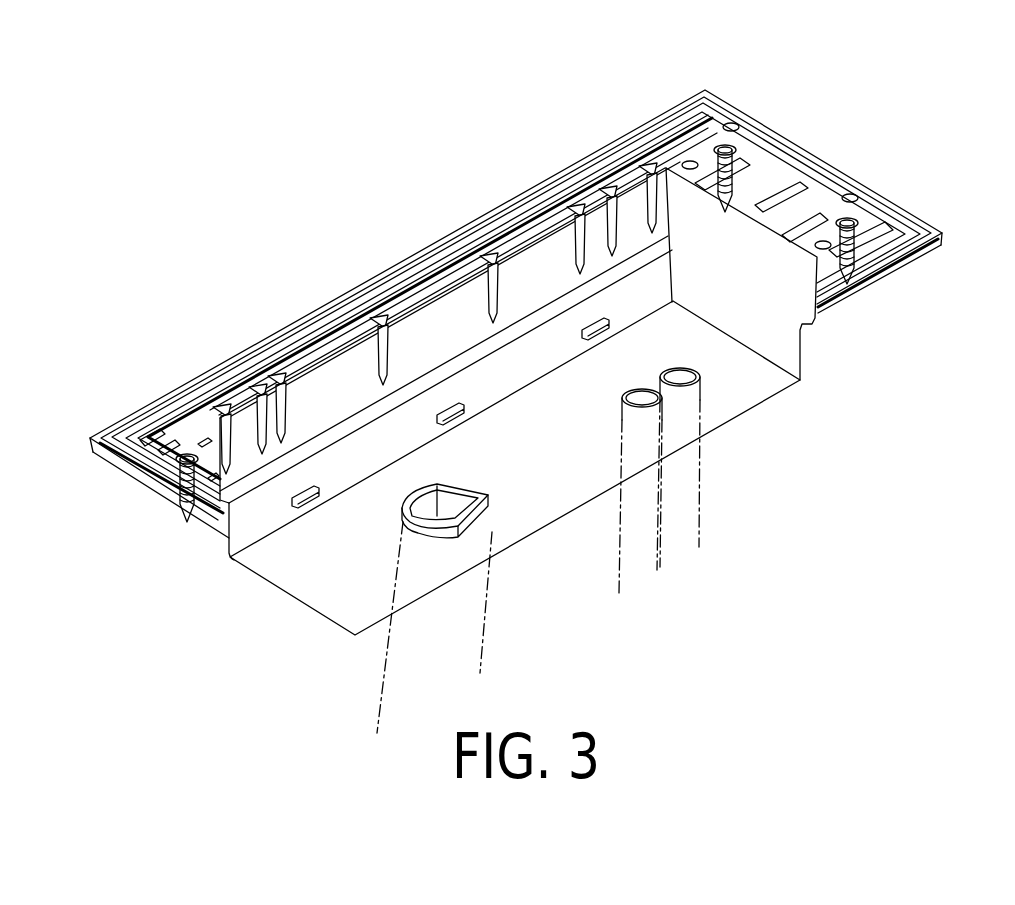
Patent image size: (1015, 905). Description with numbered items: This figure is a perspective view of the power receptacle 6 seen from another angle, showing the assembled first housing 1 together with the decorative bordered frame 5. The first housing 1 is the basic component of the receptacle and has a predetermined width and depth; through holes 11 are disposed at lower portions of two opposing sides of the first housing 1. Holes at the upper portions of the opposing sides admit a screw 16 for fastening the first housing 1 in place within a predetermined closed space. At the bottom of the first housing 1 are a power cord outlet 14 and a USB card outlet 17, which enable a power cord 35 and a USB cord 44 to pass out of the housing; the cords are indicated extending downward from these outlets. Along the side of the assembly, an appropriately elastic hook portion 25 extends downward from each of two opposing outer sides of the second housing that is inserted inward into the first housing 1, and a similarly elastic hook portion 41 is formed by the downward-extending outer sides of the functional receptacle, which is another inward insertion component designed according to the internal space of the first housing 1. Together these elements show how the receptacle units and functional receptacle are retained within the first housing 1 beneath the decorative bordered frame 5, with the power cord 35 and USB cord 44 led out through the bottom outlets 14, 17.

The first housing 1 is at (788, 350).
The decorative bordered frame 5 is at (747, 112).
The power receptacle 6 is at (883, 160).
The through holes 11 is at (229, 537).
The power cord outlet 14 is at (477, 500).
The screw 16 is at (853, 262).
The USB card outlet 17 is at (683, 352).
The hook portion 25 is at (307, 484).
The power cord 35 is at (403, 683).
The hook portion 41 is at (592, 323).
The USB cord 44 is at (700, 497).